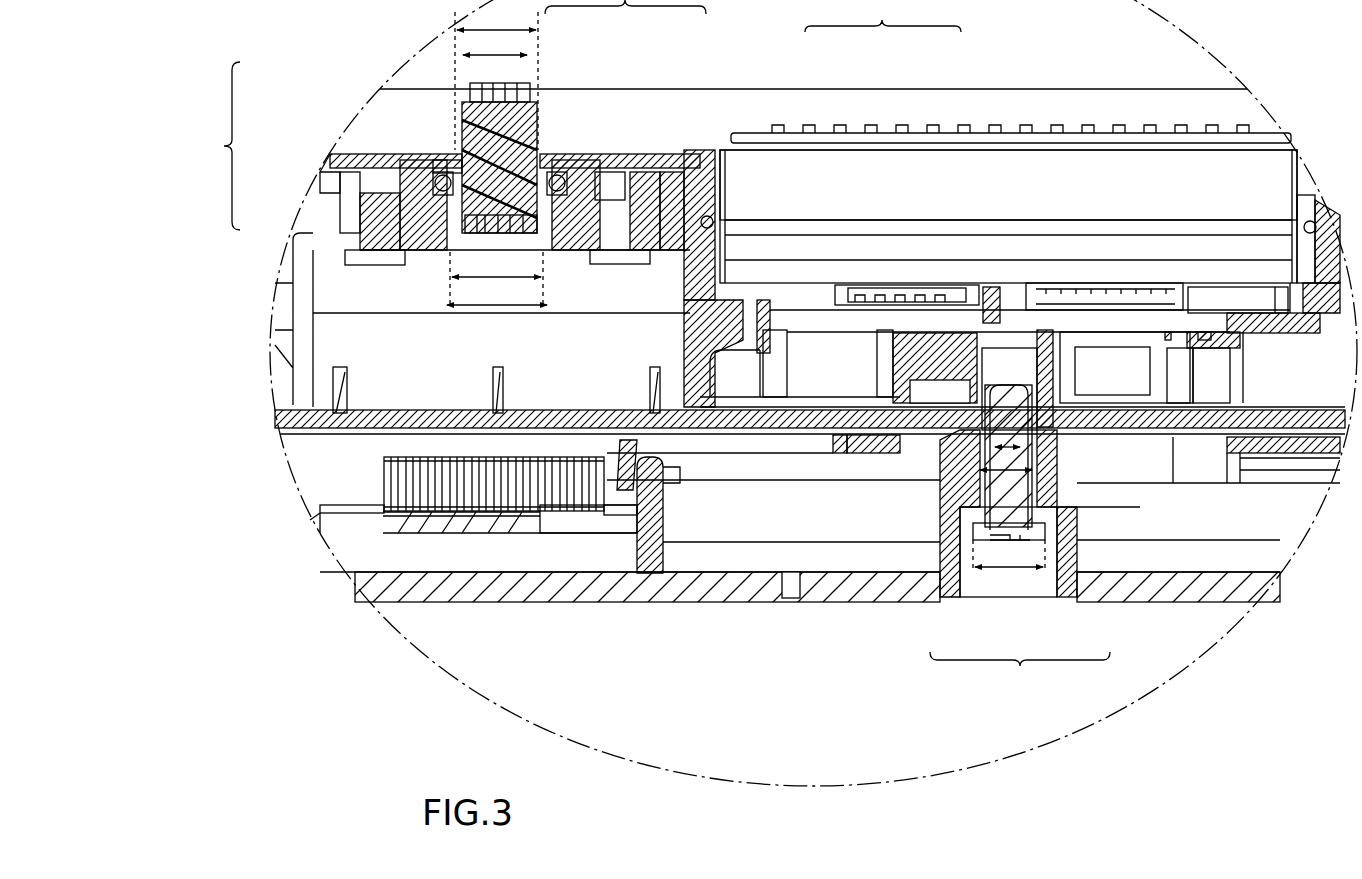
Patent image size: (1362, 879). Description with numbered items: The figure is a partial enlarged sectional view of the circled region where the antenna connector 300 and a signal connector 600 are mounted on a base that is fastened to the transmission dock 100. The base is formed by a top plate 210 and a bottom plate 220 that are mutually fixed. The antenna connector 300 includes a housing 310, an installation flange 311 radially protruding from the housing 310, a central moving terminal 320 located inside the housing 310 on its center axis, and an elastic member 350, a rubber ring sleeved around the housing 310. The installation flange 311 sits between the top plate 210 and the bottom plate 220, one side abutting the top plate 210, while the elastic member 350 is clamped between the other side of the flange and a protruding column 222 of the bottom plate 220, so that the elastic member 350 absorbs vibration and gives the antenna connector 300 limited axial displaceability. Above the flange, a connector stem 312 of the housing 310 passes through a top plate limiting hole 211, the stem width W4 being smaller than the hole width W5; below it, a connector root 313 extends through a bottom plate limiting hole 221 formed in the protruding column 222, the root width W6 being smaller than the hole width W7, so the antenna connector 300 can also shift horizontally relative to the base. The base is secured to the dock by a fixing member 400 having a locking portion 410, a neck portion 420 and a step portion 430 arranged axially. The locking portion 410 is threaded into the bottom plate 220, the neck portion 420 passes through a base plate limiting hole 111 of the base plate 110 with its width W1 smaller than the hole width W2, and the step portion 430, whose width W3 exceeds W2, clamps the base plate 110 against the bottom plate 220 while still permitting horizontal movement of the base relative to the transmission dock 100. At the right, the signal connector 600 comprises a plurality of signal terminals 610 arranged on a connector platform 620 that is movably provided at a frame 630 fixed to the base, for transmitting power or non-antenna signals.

The transmission dock 100 is at (1007, 107).
The base plate 110 is at (855, 553).
The base plate limiting hole 111 is at (1130, 490).
The top plate 210 is at (680, 150).
The top plate limiting hole 211 is at (562, 157).
The bottom plate 220 is at (643, 193).
The bottom plate limiting hole 221 is at (585, 190).
The protruding column 222 is at (620, 193).
The antenna connector 300 is at (211, 146).
The housing 310 is at (460, 113).
The installation flange 311 is at (442, 159).
The connector stem 312 is at (483, 130).
The connector root 313 is at (473, 205).
The central moving terminal 320 is at (470, 72).
The elastic member 350 is at (440, 193).
The fixing member 400 is at (1020, 672).
The locking portion 410 is at (975, 468).
The neck portion 420 is at (1067, 487).
The step portion 430 is at (1000, 517).
The signal connector 600 is at (883, 16).
The signal terminal 610 is at (954, 127).
The connector platform 620 is at (877, 133).
The frame 630 is at (822, 163).
The width W1 is at (1028, 447).
The width W2 is at (1040, 470).
The width W3 is at (1009, 556).
The width W4 is at (495, 44).
The width W5 is at (496, 78).
The width W6 is at (496, 278).
The width W7 is at (497, 294).